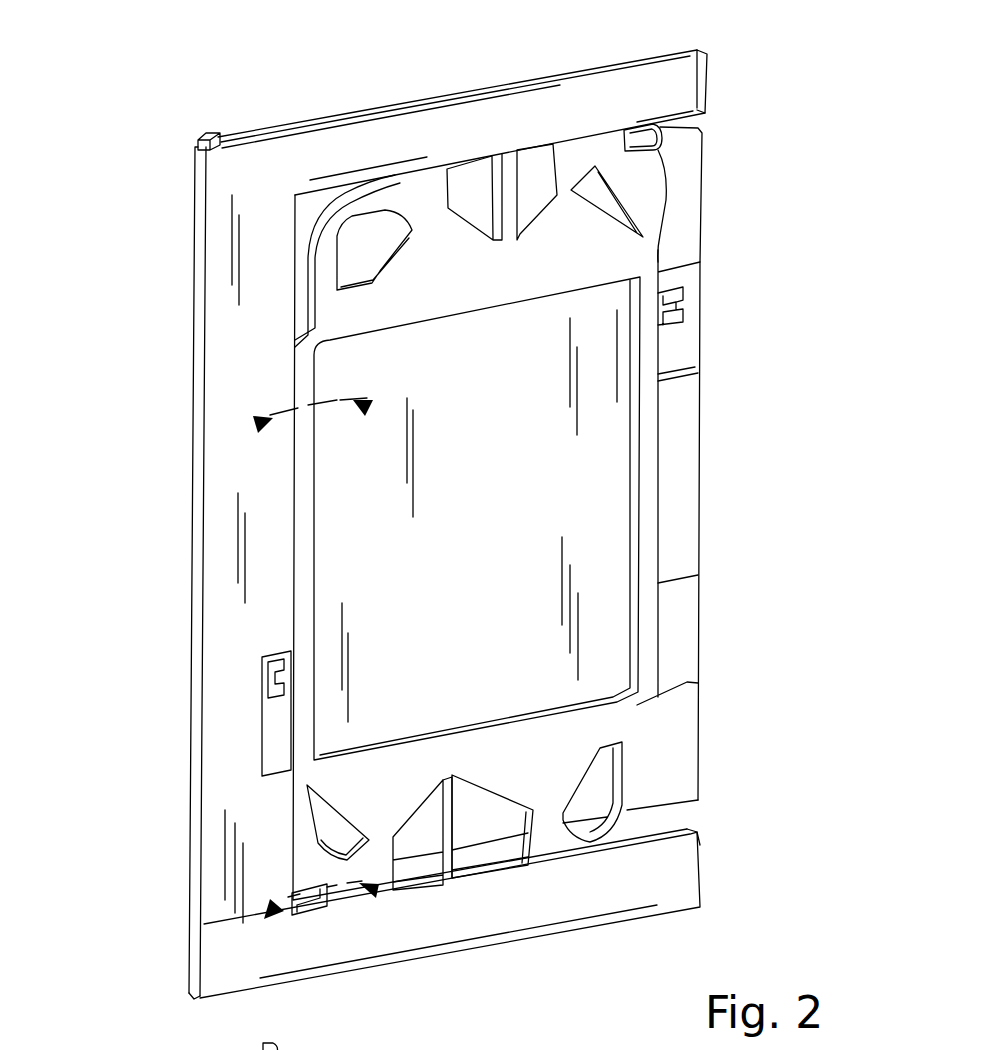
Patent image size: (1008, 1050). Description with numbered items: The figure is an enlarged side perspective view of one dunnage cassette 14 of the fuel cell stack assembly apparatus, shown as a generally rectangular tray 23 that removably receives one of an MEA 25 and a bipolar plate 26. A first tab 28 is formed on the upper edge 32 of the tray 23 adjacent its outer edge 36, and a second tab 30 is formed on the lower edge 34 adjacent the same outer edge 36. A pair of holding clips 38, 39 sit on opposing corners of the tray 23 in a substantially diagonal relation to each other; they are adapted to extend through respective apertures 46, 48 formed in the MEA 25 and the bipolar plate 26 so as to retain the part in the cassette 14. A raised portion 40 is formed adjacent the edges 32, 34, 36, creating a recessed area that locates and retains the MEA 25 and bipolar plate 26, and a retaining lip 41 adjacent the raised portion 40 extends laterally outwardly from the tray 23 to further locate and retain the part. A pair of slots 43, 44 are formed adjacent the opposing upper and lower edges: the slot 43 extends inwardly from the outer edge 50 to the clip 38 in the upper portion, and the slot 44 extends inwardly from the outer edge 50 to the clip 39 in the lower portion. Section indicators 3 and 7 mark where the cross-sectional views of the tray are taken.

The dunnage cassette 14 is at (728, 487).
The tray 23 is at (218, 549).
The MEA 25 is at (597, 428).
The bipolar plate 26 is at (590, 518).
The first tab 28 is at (197, 142).
The second tab 30 is at (193, 998).
The upper edge 32 is at (468, 88).
The lower edge 34 is at (500, 944).
The outer edge 36 is at (193, 412).
The holding clip 38 is at (625, 133).
The holding clip 39 is at (290, 912).
The raised portion 40 is at (215, 783).
The retaining lip 41 is at (700, 833).
The slot 43 is at (692, 126).
The slot 44 is at (680, 815).
The aperture 46 is at (660, 125).
The aperture 48 is at (262, 907).
The outer edge 50 is at (698, 533).
The section line 3 is at (425, 430).
The section line 7 is at (430, 921).